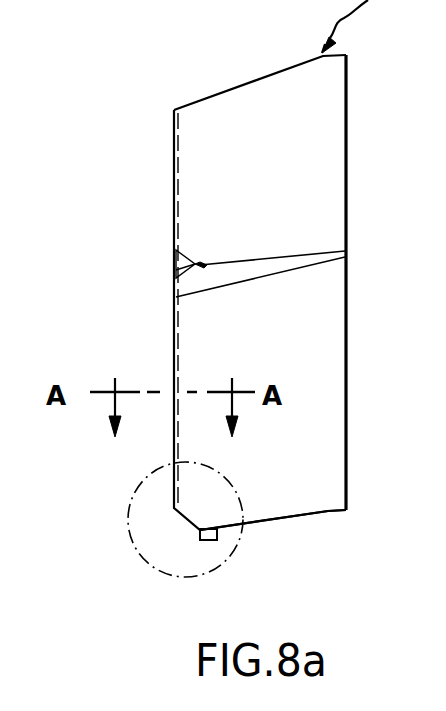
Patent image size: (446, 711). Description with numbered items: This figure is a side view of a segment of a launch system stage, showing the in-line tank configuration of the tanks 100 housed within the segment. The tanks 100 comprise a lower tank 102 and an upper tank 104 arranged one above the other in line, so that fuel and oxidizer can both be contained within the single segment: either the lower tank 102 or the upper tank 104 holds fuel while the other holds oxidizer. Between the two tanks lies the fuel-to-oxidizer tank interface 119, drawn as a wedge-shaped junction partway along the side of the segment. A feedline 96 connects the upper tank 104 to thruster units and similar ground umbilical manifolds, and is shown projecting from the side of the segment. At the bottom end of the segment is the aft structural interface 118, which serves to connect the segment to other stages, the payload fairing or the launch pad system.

The in-line tank 100 is at (136, 185).
The lower tank 102 is at (329, 78).
The fuel-to-oxidizer tank interface 119 is at (345, 252).
The feedline 96 is at (196, 264).
The upper tank 104 is at (328, 320).
The aft structural interface 118 is at (326, 515).